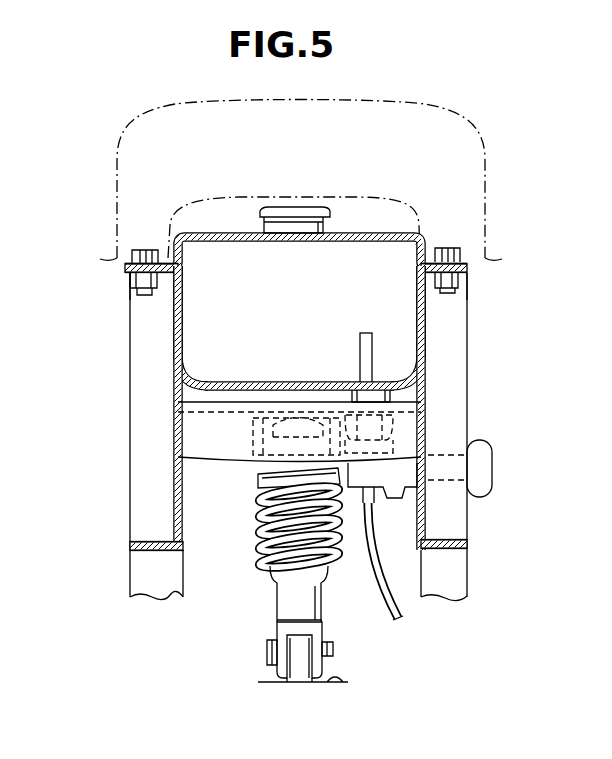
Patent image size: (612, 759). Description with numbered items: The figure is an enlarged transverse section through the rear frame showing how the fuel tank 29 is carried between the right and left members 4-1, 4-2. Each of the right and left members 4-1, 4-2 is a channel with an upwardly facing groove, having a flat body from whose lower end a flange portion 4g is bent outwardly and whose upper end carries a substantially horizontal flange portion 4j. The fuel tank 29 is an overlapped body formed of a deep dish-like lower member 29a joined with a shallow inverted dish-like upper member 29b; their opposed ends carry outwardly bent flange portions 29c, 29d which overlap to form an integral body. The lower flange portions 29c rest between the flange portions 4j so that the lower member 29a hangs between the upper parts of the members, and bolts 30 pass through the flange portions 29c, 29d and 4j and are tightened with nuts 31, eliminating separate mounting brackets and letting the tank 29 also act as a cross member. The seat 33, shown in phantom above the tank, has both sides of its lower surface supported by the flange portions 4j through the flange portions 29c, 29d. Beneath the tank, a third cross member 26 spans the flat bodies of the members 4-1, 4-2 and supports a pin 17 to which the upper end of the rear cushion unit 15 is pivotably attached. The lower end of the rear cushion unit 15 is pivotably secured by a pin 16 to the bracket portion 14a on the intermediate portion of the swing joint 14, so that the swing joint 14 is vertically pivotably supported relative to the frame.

The seat 33 is at (435, 102).
The bolts 30 is at (145, 252).
The flange portion of upper member 29d is at (128, 263).
The flange portion of lower member 29c is at (125, 270).
The nuts 31 is at (132, 293).
The flange portions 4j is at (166, 283).
The fuel tank 29 is at (189, 332).
The lower member 29a is at (260, 383).
The upper member 29b is at (352, 242).
The right member 4-1 is at (458, 406).
The left member 4-2 is at (133, 507).
The third cross member 26 is at (217, 459).
The pin 17 is at (293, 450).
The rear cushion unit 15 is at (297, 532).
The flange portion 4g is at (137, 552).
The pin 16 is at (334, 650).
The swing joint 14 is at (334, 678).
The bracket portion 14a is at (300, 655).